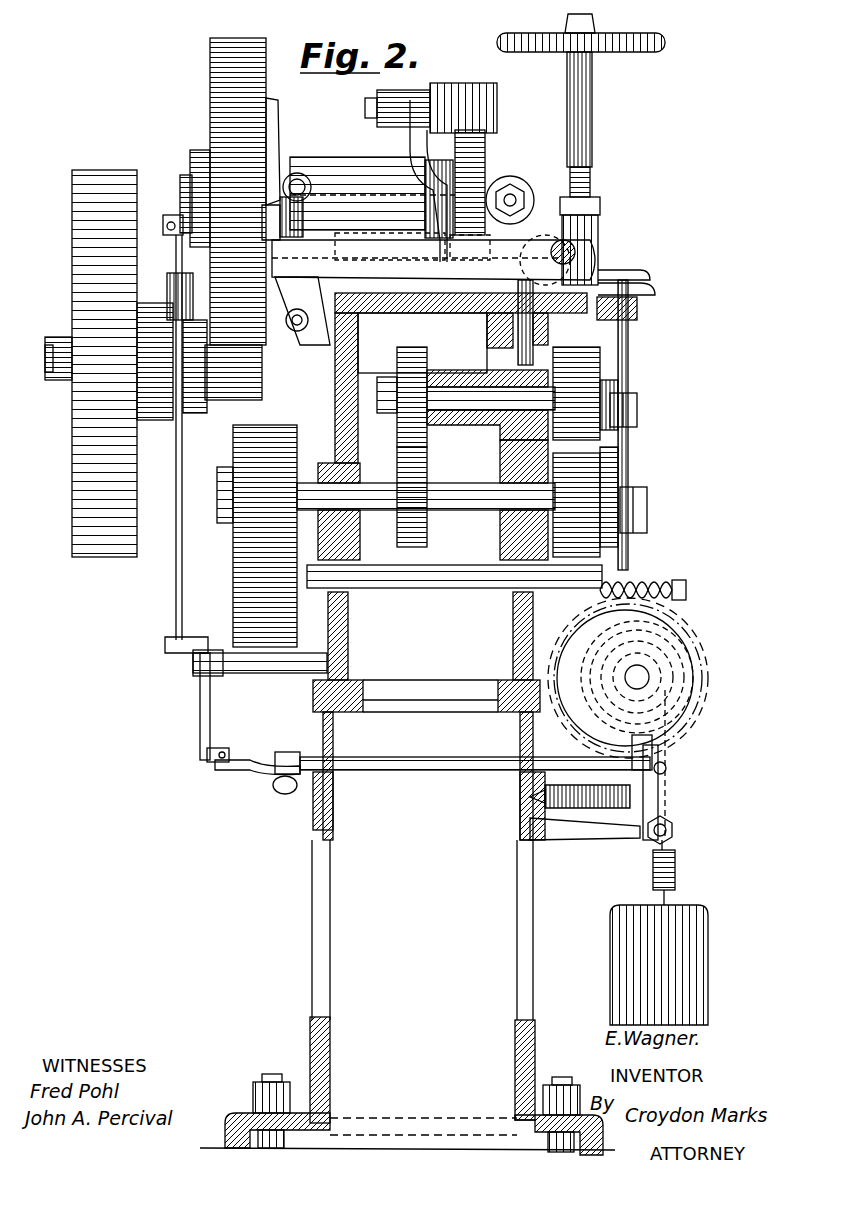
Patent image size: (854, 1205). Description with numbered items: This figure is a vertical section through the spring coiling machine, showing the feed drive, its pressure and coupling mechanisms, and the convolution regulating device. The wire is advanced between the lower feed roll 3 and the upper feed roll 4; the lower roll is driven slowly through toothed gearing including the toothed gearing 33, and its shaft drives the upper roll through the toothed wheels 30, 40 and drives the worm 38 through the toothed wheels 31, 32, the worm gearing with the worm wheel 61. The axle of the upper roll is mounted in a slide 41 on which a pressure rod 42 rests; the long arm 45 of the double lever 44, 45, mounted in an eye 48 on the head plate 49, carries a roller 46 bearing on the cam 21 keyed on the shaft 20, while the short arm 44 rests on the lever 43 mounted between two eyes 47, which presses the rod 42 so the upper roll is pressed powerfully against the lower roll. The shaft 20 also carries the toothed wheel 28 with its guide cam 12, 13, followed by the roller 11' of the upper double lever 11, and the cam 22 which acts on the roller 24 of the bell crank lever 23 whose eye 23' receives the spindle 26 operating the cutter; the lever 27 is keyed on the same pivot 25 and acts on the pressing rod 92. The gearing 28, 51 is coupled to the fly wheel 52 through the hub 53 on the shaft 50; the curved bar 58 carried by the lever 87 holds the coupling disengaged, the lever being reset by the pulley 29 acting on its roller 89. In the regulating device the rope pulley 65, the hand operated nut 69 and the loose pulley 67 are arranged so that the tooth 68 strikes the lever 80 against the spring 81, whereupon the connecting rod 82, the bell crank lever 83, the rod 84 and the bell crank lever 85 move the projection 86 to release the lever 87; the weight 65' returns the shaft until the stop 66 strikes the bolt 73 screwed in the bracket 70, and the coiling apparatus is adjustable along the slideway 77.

The toothed wheel 28 is at (230, 40).
The guide cam 13 is at (270, 130).
The pulley 29 is at (196, 148).
The shaft 20 is at (183, 175).
The roller 89 is at (166, 216).
The lever 87 is at (175, 474).
The curved bar 58 is at (166, 290).
The fly wheel 52 is at (100, 172).
The shaft 50 is at (58, 380).
The hub 53 is at (155, 415).
The toothed wheel 51 is at (228, 388).
The eye 48 is at (355, 205).
The short arm of double lever 44 is at (300, 175).
The roller 11' is at (318, 185).
The guide cam 12 is at (270, 205).
The pivot 25 is at (580, 255).
The double lever 11 is at (325, 316).
The roller 46 is at (475, 90).
The long arm of double lever 45 is at (420, 130).
The cam 21 is at (480, 165).
The cam 22 is at (520, 178).
The roller 24 is at (524, 198).
The bell crank lever 23 is at (581, 100).
The spindle 26 is at (585, 200).
The lever 43 is at (598, 215).
The eye of bell crank lever 23' is at (604, 250).
The eyes 47 is at (640, 272).
The lever 27 is at (658, 284).
The bracket 70 is at (545, 633).
The head plate 49 is at (422, 343).
The toothed wheel 40 is at (427, 360).
The toothed wheel 30 is at (427, 476).
The slide 41 is at (530, 372).
The pressure rod 42 is at (628, 332).
The pressing rod 92 is at (628, 362).
The upper feed roll 4 is at (637, 400).
The lower feed roll 3 is at (628, 478).
The toothed wheel 31 is at (630, 540).
The toothed wheel 32 is at (625, 582).
The worm 38 is at (688, 588).
The slideway 77 is at (428, 588).
The bolt 73 is at (676, 618).
The worm wheel 61 is at (680, 640).
The hand operated nut 69 is at (684, 677).
The rope pulley 65 is at (660, 677).
The stop 66 is at (620, 688).
The loose pulley 67 is at (678, 715).
The stop or tooth 68 is at (655, 745).
The lever 80 is at (660, 798).
The spring 81 is at (605, 826).
The weight 65' is at (643, 932).
The toothed gearing 33 is at (240, 572).
The projection 86 is at (195, 640).
The bell crank lever 85 is at (199, 712).
The rod 84 is at (226, 750).
The bell crank lever 83 is at (250, 775).
The connecting rod 82 is at (405, 772).